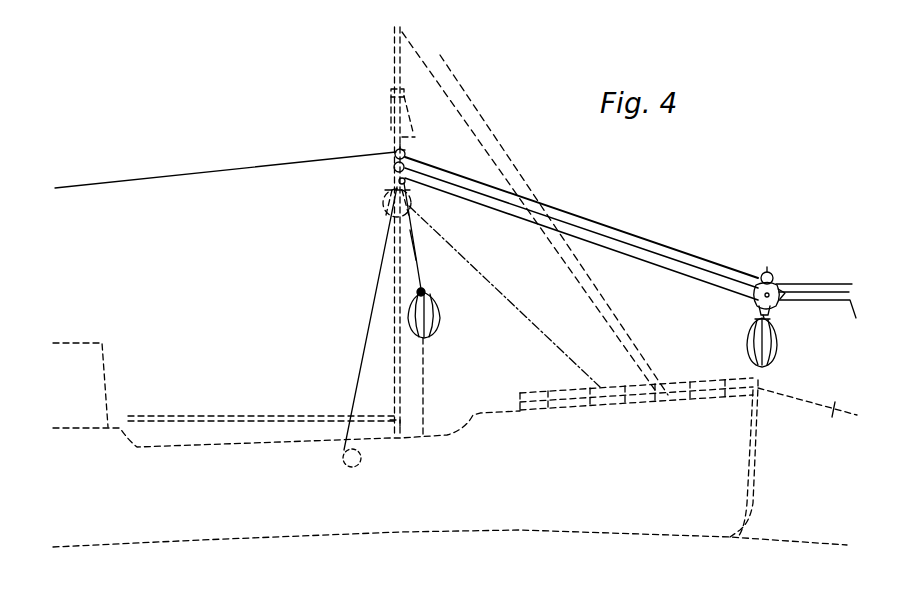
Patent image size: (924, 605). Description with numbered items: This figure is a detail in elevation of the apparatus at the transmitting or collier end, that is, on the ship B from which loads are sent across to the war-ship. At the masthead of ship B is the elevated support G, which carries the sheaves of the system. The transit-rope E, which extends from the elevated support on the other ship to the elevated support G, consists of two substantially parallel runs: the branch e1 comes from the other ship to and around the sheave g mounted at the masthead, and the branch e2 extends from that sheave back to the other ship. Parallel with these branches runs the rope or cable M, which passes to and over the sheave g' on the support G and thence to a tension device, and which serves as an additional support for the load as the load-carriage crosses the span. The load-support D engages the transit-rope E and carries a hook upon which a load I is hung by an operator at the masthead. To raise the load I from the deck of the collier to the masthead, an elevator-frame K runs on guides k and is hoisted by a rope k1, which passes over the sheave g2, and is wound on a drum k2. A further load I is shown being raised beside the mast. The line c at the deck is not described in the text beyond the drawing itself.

The elevated support G is at (235, 232).
The sheave g' is at (426, 137).
The sheave g is at (381, 175).
The sheave g2 is at (408, 185).
The rope or cable M is at (608, 230).
The branch of the transit-rope e2 is at (645, 254).
The branch of the transit-rope e1 is at (668, 272).
The load-support D is at (773, 280).
The transit-rope E is at (816, 314).
The load I is at (753, 345).
The elevator-frame K is at (418, 252).
The guides k is at (425, 354).
The rope k1 is at (373, 308).
The drum k2 is at (342, 470).
The ship B is at (450, 445).
The deck line c is at (807, 401).